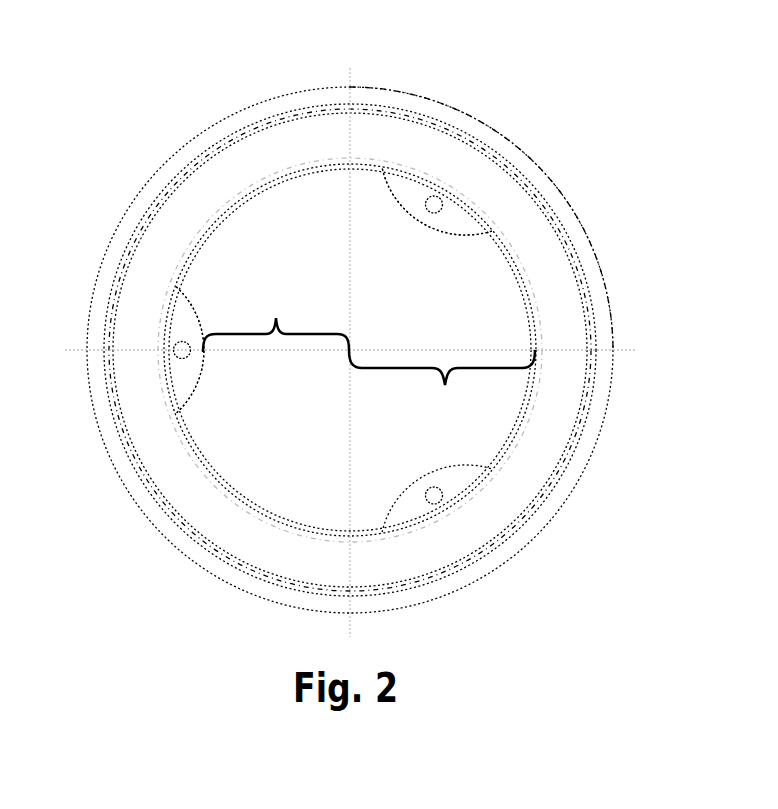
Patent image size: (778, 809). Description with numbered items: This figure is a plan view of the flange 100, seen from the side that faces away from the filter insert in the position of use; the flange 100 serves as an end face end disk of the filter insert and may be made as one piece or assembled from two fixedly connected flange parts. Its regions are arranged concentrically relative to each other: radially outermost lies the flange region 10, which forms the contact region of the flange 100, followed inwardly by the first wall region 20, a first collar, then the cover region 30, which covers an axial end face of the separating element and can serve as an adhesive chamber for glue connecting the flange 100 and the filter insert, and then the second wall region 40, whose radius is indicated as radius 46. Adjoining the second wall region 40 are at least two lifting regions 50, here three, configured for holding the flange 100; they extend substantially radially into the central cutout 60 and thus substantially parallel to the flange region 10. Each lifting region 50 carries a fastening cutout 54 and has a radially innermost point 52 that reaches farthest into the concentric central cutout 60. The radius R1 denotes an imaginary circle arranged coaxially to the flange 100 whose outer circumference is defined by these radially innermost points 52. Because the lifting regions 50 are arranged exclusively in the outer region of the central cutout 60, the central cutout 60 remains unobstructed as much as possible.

The flange 100 is at (146, 82).
The flange region 10 is at (592, 242).
The first wall region 20 is at (588, 323).
The cover region 30 is at (321, 149).
The second wall region 40 is at (532, 315).
The radius of the second wall region 46 is at (442, 382).
The lifting region 50 is at (402, 186).
The radially innermost point of the lifting regions 52 is at (425, 221).
The fastening cutout 54 is at (436, 206).
The central cutout 60 is at (297, 413).
The radius of an imaginary circle R1 is at (276, 319).